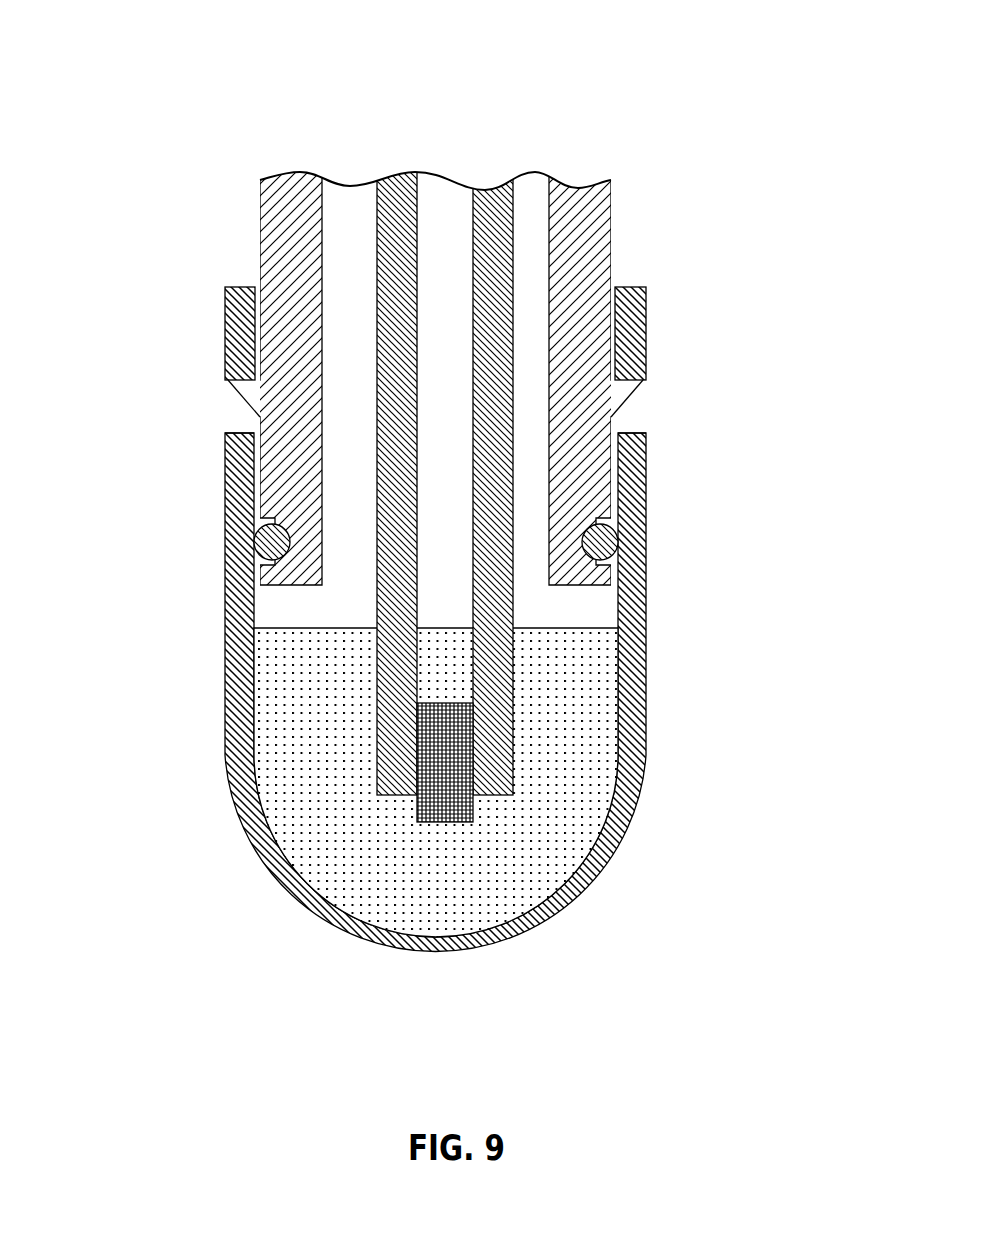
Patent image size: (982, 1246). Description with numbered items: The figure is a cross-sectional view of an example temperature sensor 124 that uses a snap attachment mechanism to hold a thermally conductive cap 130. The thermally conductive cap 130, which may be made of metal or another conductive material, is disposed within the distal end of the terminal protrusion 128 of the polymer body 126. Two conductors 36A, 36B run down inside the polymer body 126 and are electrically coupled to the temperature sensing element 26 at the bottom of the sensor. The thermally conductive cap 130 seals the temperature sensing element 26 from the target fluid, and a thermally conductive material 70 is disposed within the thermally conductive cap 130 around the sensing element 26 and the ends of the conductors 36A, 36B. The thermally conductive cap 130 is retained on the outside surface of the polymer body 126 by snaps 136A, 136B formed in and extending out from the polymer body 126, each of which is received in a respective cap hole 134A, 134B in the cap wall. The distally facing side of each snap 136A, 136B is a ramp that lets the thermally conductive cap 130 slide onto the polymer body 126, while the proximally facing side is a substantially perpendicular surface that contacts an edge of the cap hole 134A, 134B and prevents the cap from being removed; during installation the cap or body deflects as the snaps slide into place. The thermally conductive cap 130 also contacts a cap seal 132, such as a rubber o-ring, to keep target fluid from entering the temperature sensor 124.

The temperature sensor 124 is at (442, 506).
The polymer body 126 is at (611, 250).
The terminal protrusion 128 is at (433, 372).
The thermally conductive cap 130 is at (435, 647).
The cap seal 132 is at (613, 548).
The cap hole 134A is at (213, 427).
The cap hole 134B is at (654, 425).
The snap 136A is at (210, 388).
The snap 136B is at (660, 386).
The conductor 36A is at (387, 195).
The conductor 36B is at (490, 195).
The temperature sensing element 26 is at (422, 813).
The thermally conductive material 70 is at (580, 838).